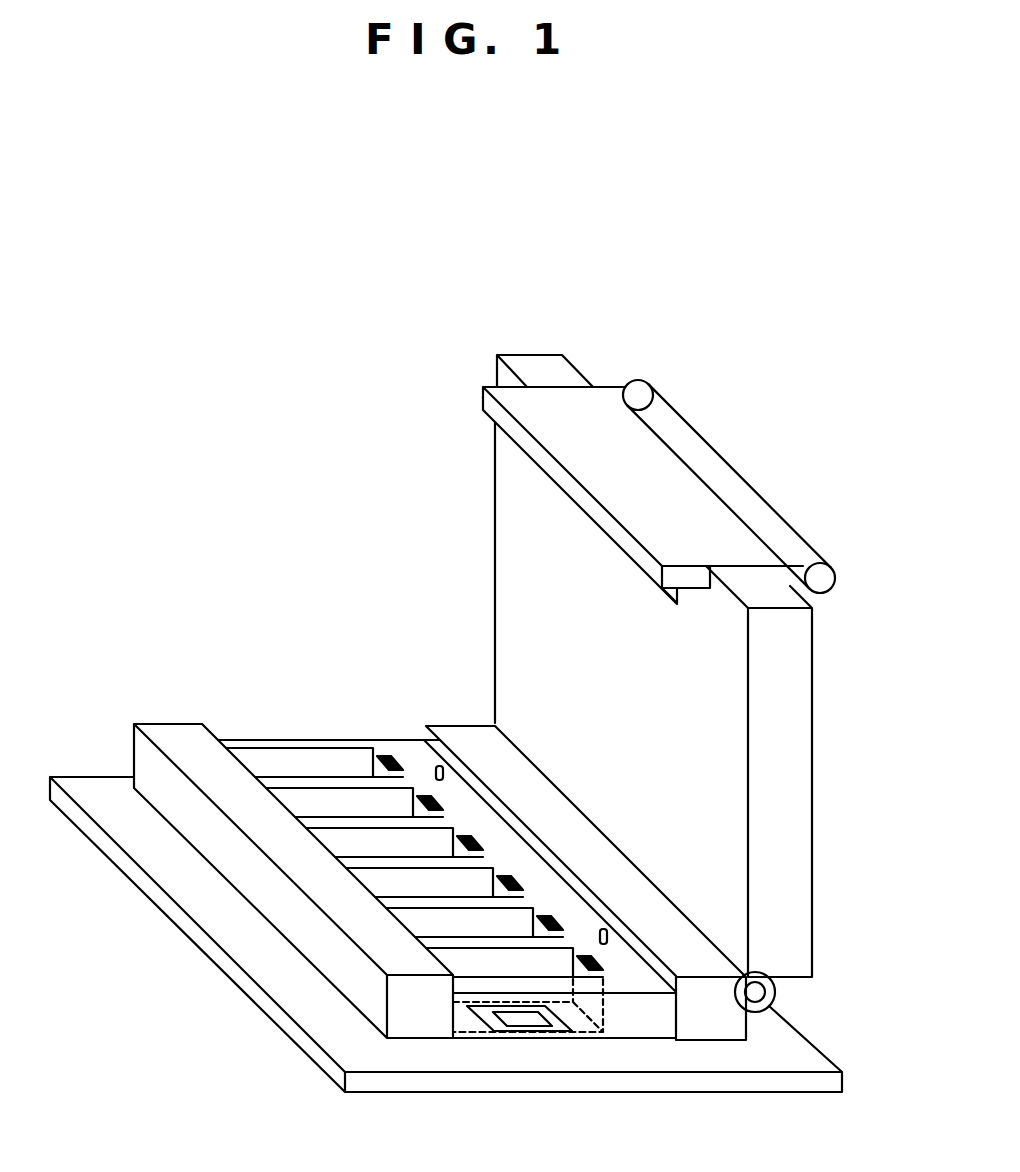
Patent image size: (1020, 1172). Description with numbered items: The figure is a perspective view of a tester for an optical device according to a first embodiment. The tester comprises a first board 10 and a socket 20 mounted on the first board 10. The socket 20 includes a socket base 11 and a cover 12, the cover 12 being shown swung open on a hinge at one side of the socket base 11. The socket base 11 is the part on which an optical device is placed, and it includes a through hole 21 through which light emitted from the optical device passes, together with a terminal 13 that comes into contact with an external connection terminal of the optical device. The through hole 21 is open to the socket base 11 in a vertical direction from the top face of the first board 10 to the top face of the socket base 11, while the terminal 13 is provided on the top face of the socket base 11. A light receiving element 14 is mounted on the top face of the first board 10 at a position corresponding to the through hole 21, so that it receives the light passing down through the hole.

The first board 10 is at (258, 948).
The socket base 11 is at (175, 734).
The cover 12 is at (510, 513).
The terminal 13 is at (392, 756).
The light receiving element 14 is at (532, 1020).
The socket 20 is at (816, 752).
The through hole 21 is at (490, 962).